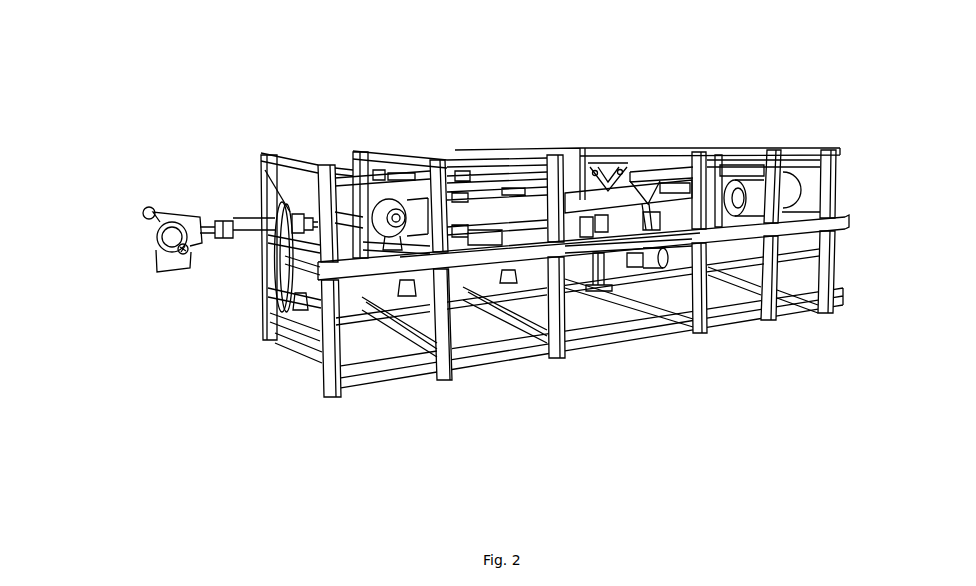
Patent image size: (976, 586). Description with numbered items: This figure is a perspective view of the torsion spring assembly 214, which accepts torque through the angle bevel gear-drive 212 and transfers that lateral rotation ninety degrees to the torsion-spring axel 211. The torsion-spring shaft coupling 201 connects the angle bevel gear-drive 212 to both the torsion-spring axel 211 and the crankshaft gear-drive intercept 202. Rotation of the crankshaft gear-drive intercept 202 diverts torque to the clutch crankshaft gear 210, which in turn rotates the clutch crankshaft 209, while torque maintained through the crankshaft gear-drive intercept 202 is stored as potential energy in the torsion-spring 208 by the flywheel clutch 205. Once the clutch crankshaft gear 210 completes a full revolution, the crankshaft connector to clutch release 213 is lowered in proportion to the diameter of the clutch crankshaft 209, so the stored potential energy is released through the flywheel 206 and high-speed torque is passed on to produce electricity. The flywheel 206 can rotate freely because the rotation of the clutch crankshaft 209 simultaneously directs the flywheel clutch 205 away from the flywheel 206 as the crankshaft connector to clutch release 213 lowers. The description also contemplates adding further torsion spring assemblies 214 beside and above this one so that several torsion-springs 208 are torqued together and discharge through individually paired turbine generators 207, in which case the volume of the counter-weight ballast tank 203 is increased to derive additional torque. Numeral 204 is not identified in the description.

The torsion-spring shaft coupling 201 is at (213, 222).
The crankshaft gear-drive intercept 202 is at (264, 185).
The counter-weight ballast tank 203 is at (345, 167).
The second upper frame 204 is at (462, 175).
The flywheel clutch 205 is at (580, 165).
The flywheel 206 is at (737, 190).
The turbine generator 207 is at (798, 180).
The torsion-spring 208 is at (680, 195).
The clutch crankshaft 209 is at (358, 292).
The clutch crankshaft gear 210 is at (270, 345).
The torsion-spring axel 211 is at (252, 238).
The angle bevel gear-drive 212 is at (147, 232).
The crankshaft connector to clutch release 213 is at (610, 285).
The torsion spring assembly 214 is at (163, 328).